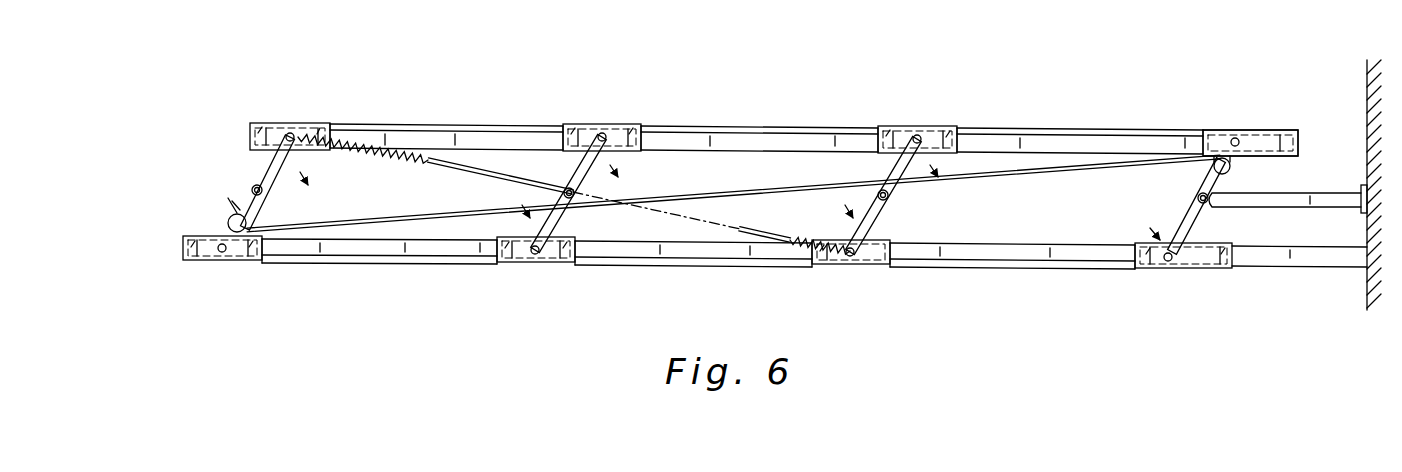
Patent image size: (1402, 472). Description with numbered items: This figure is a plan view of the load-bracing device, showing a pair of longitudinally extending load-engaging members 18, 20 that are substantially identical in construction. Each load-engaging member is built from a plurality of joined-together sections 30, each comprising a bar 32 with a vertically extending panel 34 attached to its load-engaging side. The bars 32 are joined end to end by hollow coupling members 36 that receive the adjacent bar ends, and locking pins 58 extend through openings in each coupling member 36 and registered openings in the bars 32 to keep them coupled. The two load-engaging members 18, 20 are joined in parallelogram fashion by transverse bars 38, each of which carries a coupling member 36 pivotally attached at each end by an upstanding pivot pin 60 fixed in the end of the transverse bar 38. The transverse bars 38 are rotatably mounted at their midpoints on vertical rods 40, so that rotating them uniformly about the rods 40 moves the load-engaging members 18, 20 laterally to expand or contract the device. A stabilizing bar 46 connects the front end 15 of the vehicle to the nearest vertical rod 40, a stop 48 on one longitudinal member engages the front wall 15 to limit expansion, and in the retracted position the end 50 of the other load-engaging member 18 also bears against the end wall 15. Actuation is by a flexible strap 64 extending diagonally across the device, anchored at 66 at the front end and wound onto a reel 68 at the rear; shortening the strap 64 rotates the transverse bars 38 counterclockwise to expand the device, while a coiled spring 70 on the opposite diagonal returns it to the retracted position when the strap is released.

The front end wall of the vehicle 15 is at (1365, 78).
The load-engaging member 18 is at (818, 100).
The load-engaging member 20 is at (1020, 271).
The section 30 is at (512, 123).
The bar 32 is at (495, 148).
The vertically extending panel 34 is at (447, 123).
The coupling member 36 is at (283, 122).
The transverse bar 38 is at (275, 168).
The vertical rod 40 is at (263, 192).
The stabilizing bar 46 is at (1330, 193).
The stop 48 is at (1295, 268).
The end of load-engaging member 50 is at (1300, 140).
The locking pin 58 is at (568, 128).
The pivot pin 60 is at (601, 133).
The flexible strap 64 is at (350, 226).
The strap anchor 66 is at (1219, 138).
The reel 68 is at (228, 218).
The coiled spring 70 is at (415, 168).